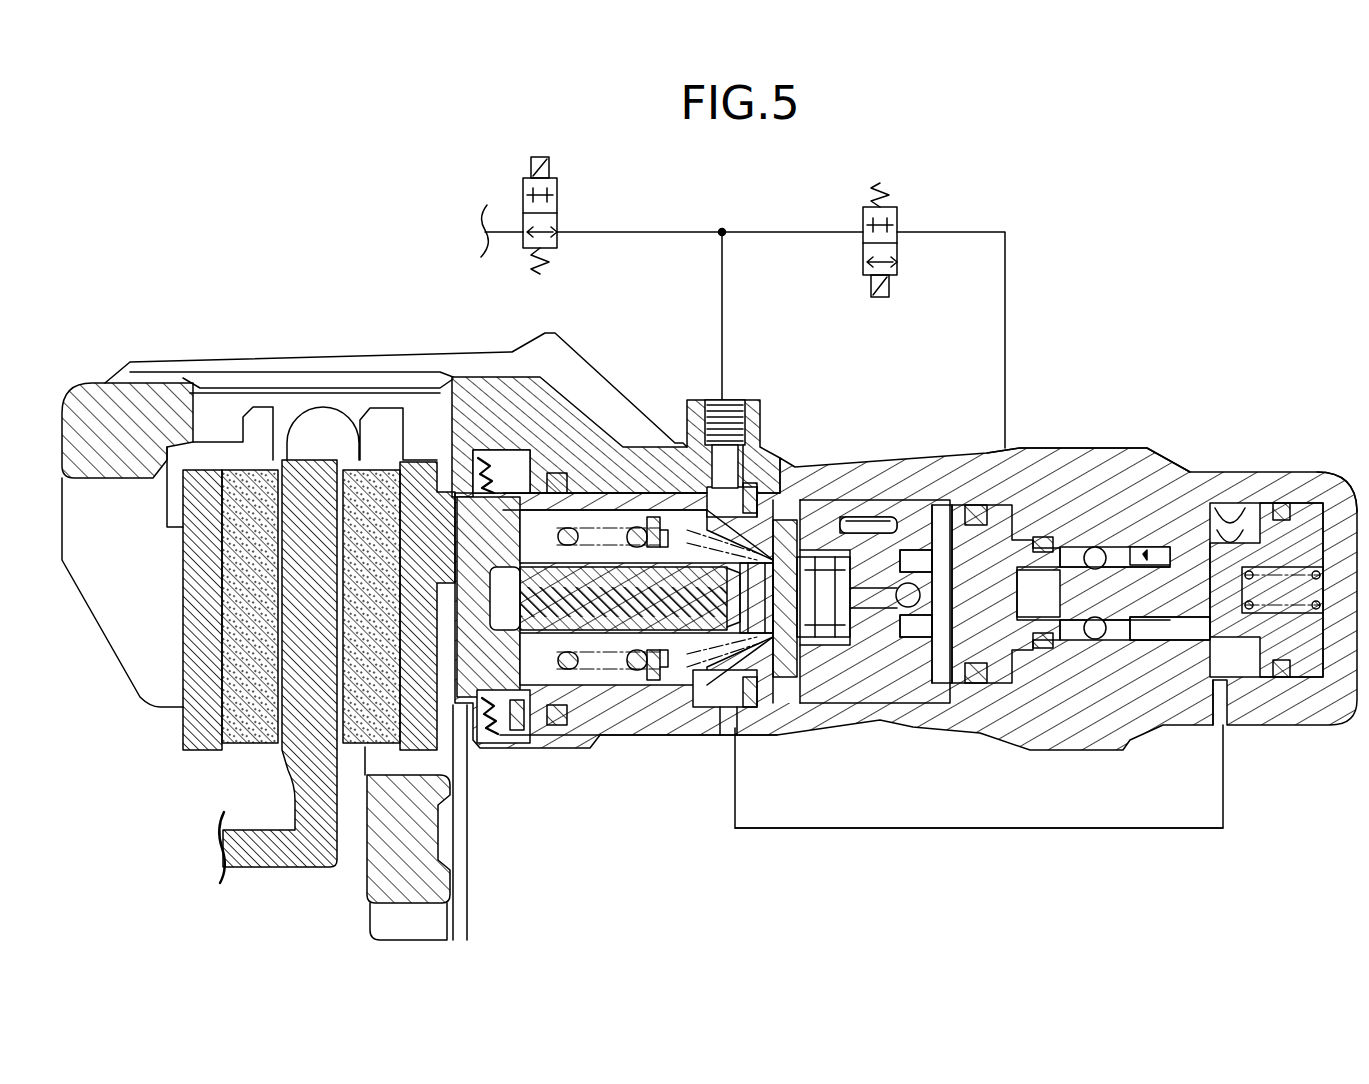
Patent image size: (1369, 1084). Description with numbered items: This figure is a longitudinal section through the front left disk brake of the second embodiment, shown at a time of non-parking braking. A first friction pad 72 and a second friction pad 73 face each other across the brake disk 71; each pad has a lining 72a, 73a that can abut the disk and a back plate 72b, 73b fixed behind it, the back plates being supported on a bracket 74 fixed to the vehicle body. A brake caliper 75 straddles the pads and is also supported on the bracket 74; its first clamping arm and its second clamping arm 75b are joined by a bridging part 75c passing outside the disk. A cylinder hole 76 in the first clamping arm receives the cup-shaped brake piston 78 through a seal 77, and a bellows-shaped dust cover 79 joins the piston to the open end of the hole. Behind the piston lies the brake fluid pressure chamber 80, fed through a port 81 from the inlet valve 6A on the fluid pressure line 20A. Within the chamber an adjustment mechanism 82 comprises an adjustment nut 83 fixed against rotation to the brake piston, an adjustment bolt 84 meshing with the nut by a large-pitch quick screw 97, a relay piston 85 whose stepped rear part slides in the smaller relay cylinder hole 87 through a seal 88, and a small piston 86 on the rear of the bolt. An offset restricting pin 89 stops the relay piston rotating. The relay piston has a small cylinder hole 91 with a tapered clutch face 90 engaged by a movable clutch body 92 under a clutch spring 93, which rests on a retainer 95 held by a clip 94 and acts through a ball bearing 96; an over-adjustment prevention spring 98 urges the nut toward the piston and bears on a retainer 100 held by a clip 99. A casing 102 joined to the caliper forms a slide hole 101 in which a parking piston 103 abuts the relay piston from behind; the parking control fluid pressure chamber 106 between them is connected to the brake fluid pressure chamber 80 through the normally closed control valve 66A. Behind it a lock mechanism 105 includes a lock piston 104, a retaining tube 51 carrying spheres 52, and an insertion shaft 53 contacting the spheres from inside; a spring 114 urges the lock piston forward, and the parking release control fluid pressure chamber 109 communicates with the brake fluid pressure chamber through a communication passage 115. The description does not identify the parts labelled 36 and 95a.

The inlet valve 6A is at (557, 202).
The fluid pressure line 20A is at (507, 222).
The control valve 66A is at (863, 218).
The housing 36 is at (806, 490).
The retaining tube 51 is at (1115, 550).
The spheres 52 is at (1095, 548).
The insertion shaft 53 is at (1132, 643).
The brake disk 71 is at (302, 480).
The first friction pad 72 is at (399, 508).
The lining 72a is at (380, 478).
The back plate 72b is at (420, 480).
The second friction pad 73 is at (218, 509).
The lining 73a is at (260, 480).
The back plate 73b is at (208, 478).
The bracket 74 is at (380, 888).
The brake caliper 75 is at (565, 326).
The second clamping arm 75b is at (105, 415).
The bridging part 75c is at (320, 370).
The cylinder hole 76 is at (622, 492).
The seal 77 is at (555, 736).
The brake piston 78 is at (524, 730).
The dust cover 79 is at (513, 729).
The brake fluid pressure chamber 80 is at (743, 455).
The port 81 is at (718, 406).
The adjustment mechanism 82 is at (596, 507).
The adjustment nut 83 is at (590, 560).
The adjustment bolt 84 is at (783, 523).
The relay piston 85 is at (848, 504).
The small piston 86 is at (905, 604).
The relay cylinder hole 87 is at (915, 638).
The seal 88 is at (945, 654).
The restricting pin 89 is at (885, 518).
The clutch face 90 is at (780, 552).
The small cylinder hole 91 is at (830, 638).
The movable clutch body 92 is at (818, 690).
The clutch spring 93 is at (713, 711).
The clip 94 is at (755, 735).
The retainer 95 is at (707, 503).
The cylinder bottom wall 95a is at (710, 735).
The ball bearing 96 is at (778, 688).
The quick screw 97 is at (621, 690).
The over-adjustment prevention spring 98 is at (638, 528).
The clip 99 is at (655, 683).
The retainer 100 is at (662, 682).
The slide hole 101 is at (1240, 513).
The casing 102 is at (1063, 450).
The parking piston 103 is at (1022, 508).
The lock piston 104 is at (1290, 514).
The lock mechanism 105 is at (1150, 544).
The parking control fluid pressure chamber 106 is at (977, 503).
The parking release control fluid pressure chamber 109 is at (1253, 505).
The spring 114 is at (1345, 530).
The communication passage 115 is at (1012, 828).